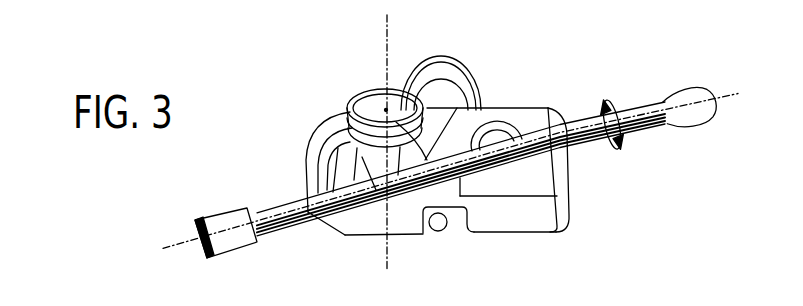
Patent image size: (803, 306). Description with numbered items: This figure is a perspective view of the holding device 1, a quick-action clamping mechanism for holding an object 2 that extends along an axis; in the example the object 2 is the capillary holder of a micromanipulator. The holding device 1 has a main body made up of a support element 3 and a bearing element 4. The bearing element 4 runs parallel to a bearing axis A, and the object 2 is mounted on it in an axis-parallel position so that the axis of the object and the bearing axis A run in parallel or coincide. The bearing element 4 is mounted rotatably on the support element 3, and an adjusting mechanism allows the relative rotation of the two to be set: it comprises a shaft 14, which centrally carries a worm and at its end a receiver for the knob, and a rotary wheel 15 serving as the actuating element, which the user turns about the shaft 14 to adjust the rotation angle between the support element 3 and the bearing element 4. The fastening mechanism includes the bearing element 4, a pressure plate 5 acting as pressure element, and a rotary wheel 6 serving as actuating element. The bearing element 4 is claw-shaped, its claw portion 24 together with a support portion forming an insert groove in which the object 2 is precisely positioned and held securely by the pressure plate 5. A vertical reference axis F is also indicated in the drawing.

The holding device 1 is at (566, 63).
The object 2 is at (660, 103).
The support element 3 is at (543, 236).
The bearing element 4 is at (306, 175).
The pressure plate 5 is at (473, 77).
The rotary wheel 6 is at (374, 105).
The shaft 14 is at (444, 238).
The rotary wheel 15 is at (443, 53).
The claw portion 24 is at (345, 236).
The vertical axis F is at (394, 137).
The bearing axis A is at (458, 162).